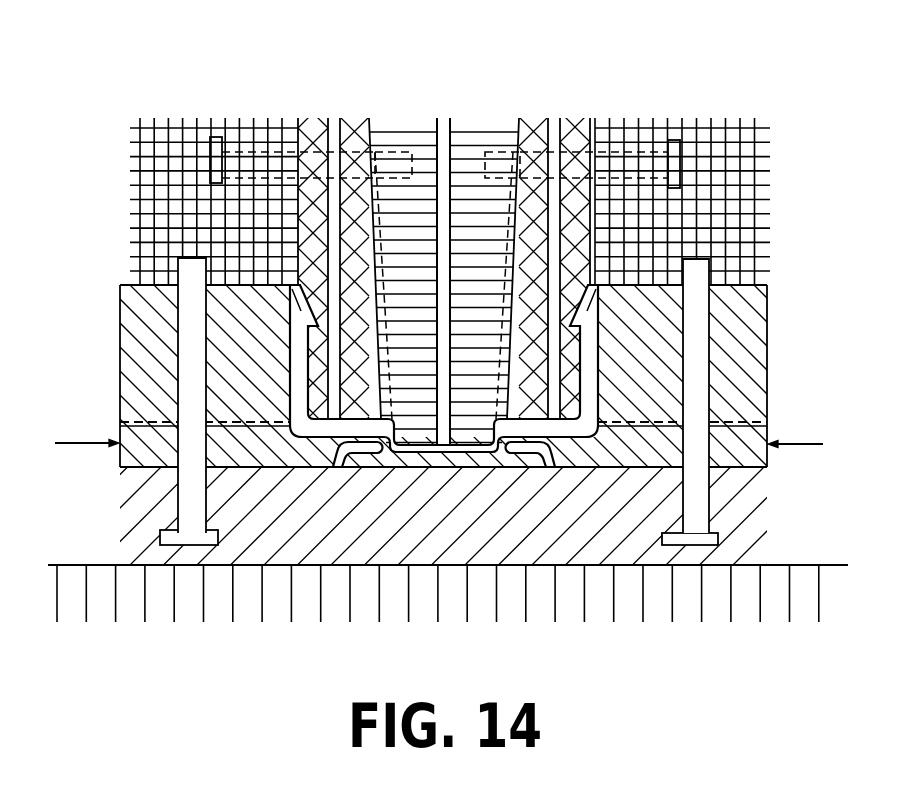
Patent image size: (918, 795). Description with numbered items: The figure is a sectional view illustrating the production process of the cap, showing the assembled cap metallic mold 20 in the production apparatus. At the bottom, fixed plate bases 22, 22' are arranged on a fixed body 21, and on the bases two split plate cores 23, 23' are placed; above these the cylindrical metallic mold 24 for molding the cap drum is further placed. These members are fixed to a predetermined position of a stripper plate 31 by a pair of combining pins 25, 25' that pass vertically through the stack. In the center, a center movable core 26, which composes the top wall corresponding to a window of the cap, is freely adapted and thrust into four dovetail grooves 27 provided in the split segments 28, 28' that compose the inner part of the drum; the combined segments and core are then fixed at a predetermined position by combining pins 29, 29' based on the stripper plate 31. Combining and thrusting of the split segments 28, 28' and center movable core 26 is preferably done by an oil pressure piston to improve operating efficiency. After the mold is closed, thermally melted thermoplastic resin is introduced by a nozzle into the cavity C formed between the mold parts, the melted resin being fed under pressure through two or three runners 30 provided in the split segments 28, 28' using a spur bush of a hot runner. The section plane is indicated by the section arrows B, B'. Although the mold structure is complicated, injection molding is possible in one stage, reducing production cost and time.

The electrical connector assembly 20 is at (395, 223).
The fixed body 21 is at (772, 588).
The fixed plate base 22 is at (447, 516).
The fixed plate base 22' is at (768, 532).
The split plate core 23 is at (165, 404).
The split plate core 23' is at (713, 410).
The cylindrical metallic mold 24 is at (143, 352).
The combining pin 25 is at (123, 395).
The combining pin 25' is at (753, 396).
The center movable core 26 is at (472, 153).
The dovetail groove 27 is at (387, 128).
The split segment 28 is at (328, 256).
The split segment 28' is at (593, 257).
The combining pin 29 is at (311, 124).
The combining pin 29' is at (607, 109).
The runner 30 is at (447, 112).
The stripper plate 31 is at (112, 179).
The section line B is at (75, 439).
The section line B' is at (811, 444).
The cavity C is at (292, 285).